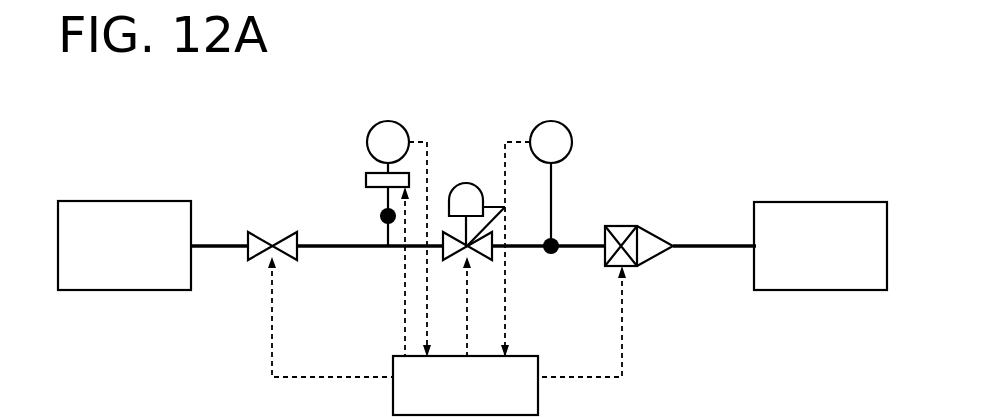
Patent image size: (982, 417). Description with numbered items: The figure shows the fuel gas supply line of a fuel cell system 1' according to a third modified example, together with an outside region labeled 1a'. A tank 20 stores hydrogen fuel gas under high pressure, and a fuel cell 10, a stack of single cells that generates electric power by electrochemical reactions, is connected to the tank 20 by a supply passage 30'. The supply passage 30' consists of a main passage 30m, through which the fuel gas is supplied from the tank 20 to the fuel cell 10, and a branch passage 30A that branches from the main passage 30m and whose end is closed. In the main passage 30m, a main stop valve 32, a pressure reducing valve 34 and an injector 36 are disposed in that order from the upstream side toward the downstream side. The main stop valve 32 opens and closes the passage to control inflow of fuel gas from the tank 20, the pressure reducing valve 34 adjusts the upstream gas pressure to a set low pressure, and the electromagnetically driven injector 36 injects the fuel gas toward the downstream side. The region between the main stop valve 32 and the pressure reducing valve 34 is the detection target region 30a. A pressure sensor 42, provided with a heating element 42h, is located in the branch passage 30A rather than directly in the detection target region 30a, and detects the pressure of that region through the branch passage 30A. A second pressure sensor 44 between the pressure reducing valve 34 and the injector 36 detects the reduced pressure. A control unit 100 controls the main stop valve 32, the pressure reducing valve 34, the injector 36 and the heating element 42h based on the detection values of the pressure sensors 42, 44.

The fuel cell 10 is at (853, 202).
The tank 20 is at (113, 201).
The detection target region 30a is at (330, 250).
The branch passage 30A is at (383, 229).
The supply passage 30' is at (548, 278).
The main passage 30m is at (578, 252).
The main stop valve 32 is at (258, 231).
The pressure reducing valve 34 is at (469, 194).
The injector 36 is at (655, 268).
The pressure sensor 42 is at (388, 121).
The heating element 42h is at (366, 176).
The pressure sensor 44 is at (550, 121).
The control unit 100 is at (540, 358).
The fuel cell system 1' is at (696, 95).
The outside region 1a' is at (872, 403).